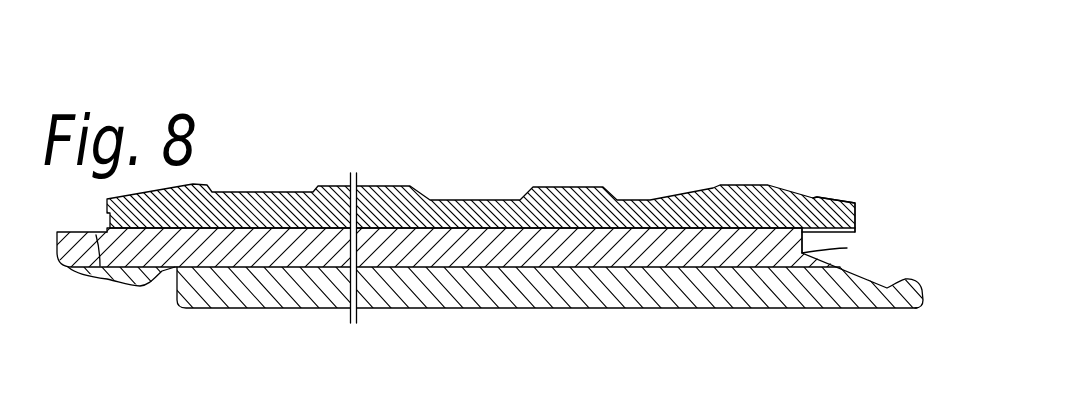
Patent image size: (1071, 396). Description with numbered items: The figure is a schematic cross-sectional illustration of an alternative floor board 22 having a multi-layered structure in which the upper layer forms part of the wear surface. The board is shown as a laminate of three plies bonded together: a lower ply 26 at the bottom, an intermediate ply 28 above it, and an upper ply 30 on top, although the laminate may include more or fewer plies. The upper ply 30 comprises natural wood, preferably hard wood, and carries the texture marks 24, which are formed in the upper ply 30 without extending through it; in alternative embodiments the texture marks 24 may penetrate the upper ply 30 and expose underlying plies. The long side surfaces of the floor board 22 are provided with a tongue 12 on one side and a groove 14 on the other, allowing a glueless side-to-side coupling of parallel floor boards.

The tongue 12 is at (100, 267).
The groove 14 is at (843, 270).
The floor board 22 is at (620, 117).
The texture marks 24 is at (423, 193).
The lower ply 26 is at (923, 300).
The intermediate ply 28 is at (847, 248).
The upper ply 30 is at (826, 196).